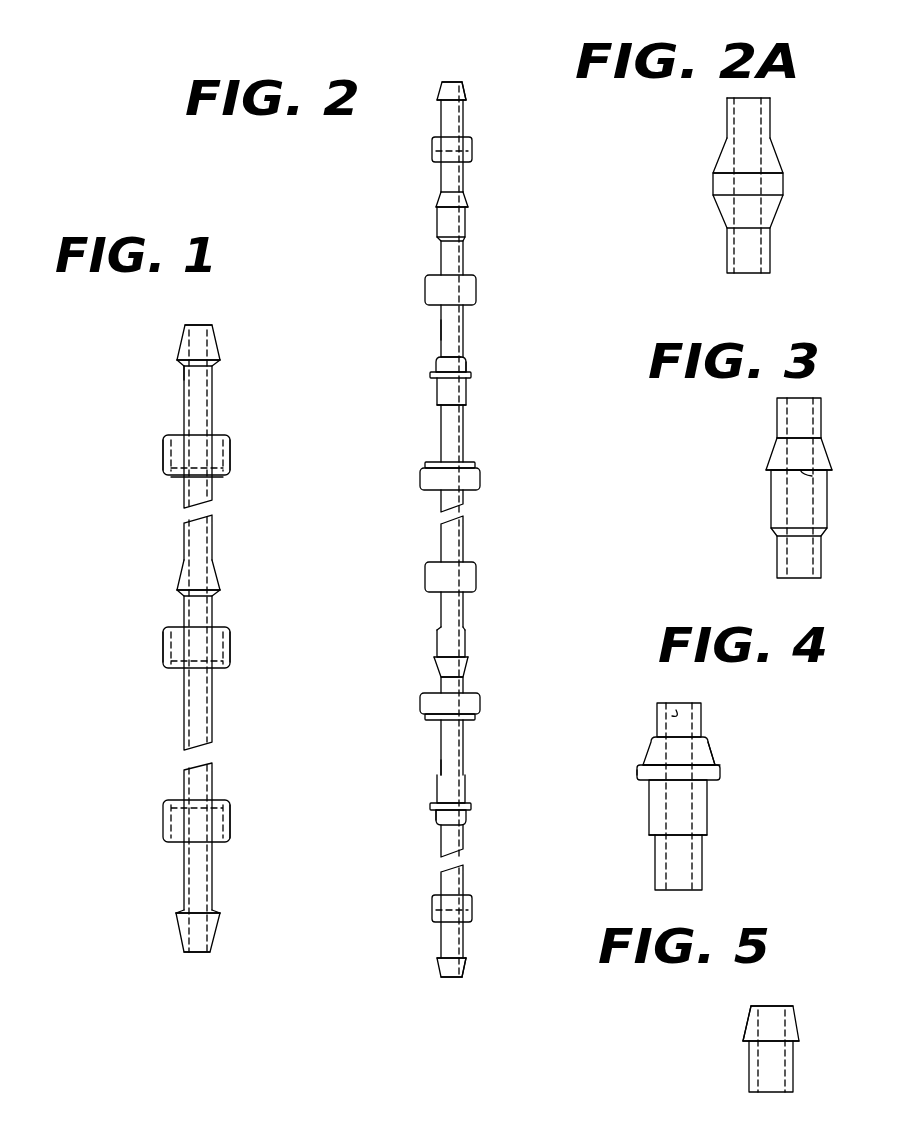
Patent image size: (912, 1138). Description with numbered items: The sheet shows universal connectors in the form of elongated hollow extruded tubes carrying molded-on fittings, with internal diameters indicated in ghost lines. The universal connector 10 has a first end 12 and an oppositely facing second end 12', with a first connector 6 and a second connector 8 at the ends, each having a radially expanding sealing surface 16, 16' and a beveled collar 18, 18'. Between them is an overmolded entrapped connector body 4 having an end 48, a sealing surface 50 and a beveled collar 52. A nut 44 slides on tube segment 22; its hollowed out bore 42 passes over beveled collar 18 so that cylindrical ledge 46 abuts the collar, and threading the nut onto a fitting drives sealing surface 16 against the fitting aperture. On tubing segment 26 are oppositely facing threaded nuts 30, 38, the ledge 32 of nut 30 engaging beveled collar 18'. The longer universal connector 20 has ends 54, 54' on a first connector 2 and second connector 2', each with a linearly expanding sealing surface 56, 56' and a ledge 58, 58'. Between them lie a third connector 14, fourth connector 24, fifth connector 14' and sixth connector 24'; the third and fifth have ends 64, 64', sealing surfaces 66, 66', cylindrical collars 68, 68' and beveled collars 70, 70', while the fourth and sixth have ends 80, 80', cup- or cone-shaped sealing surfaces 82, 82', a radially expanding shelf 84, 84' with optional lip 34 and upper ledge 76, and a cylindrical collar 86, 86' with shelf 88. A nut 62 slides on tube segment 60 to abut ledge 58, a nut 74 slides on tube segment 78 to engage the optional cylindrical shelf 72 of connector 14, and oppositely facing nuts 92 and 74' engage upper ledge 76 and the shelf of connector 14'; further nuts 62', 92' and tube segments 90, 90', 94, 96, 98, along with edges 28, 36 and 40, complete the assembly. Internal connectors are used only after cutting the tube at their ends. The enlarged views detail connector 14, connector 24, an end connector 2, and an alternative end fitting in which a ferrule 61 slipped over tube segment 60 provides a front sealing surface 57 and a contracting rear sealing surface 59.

In FIG. 2, the first connector 2 is at (436, 76).
In FIG. 5, the first connector 2 is at (789, 1045).
In FIG. 2, the second connector 2' is at (427, 957).
In FIG. 1, the entrapped connector body 4 is at (195, 578).
In FIG. 1, the first connector 6 is at (195, 348).
In FIG. 1, the second connector 8 is at (195, 938).
In FIG. 1, the universal connector 10 is at (125, 650).
In FIG. 1, the first end 12 is at (229, 302).
In FIG. 1, the second end 12' is at (220, 950).
In FIG. 2, the third overmolded connector 14 is at (431, 191).
In FIG. 3, the third overmolded connector 14 is at (769, 471).
In FIG. 2, the fifth connector 14' is at (420, 669).
In FIG. 1, the sealing surface 16 is at (220, 341).
In FIG. 1, the sealing surface 16' is at (223, 932).
In FIG. 1, the beveled collar 18 is at (220, 372).
In FIG. 1, the beveled collar 18' is at (222, 901).
In FIG. 2, the universal connector 20 is at (512, 302).
In FIG. 1, the tube segment 22 is at (184, 403).
In FIG. 2, the fourth overmolded connector 24 is at (427, 356).
In FIG. 4, the fourth overmolded connector 24 is at (652, 742).
In FIG. 2, the sixth connector 24' is at (409, 825).
In FIG. 1, the tubing segment 26 is at (185, 735).
In FIG. 1, the clip lower edge 28 is at (213, 843).
In FIG. 1, the threaded nut 30 is at (231, 823).
In FIG. 1, the ledge 32 is at (213, 805).
In FIG. 4, the lip 34 is at (645, 764).
In FIG. 1, the clip upper edge 36 is at (215, 630).
In FIG. 1, the threaded nut 38 is at (232, 650).
In FIG. 1, the clip lower edge 40 is at (215, 668).
In FIG. 1, the hollowed out bore 42 is at (215, 437).
In FIG. 1, the nut 44 is at (164, 455).
In FIG. 1, the cylindrical ledge 46 is at (215, 476).
In FIG. 1, the end 48 is at (206, 560).
In FIG. 1, the sealing surface 50 is at (220, 585).
In FIG. 1, the beveled collar 52 is at (185, 597).
In FIG. 4, the beveled collar 52 is at (676, 710).
In FIG. 2, the first end 54 is at (476, 66).
In FIG. 2A, the first end 54 is at (724, 93).
In FIG. 5, the first end 54 is at (792, 990).
In FIG. 2, the second end 54' is at (475, 994).
In FIG. 2, the sealing surface 56 is at (487, 89).
In FIG. 5, the sealing surface 56 is at (719, 1023).
In FIG. 2, the sealing surface 56' is at (492, 969).
In FIG. 2A, the sealing surface 57 is at (779, 150).
In FIG. 2, the ledge 58 is at (475, 106).
In FIG. 5, the ledge 58 is at (805, 1055).
In FIG. 2, the ledge 58' is at (474, 945).
In FIG. 2A, the rear sealing surface 59 is at (778, 215).
In FIG. 2, the tube segment 60 is at (441, 122).
In FIG. 2A, the tube segment 60 is at (771, 110).
In FIG. 3, the tube segment 60 is at (822, 410).
In FIG. 5, the tube segment 60 is at (750, 1075).
In FIG. 2A, the ferrule 61 is at (713, 178).
In FIG. 2, the nut 62 is at (477, 149).
In FIG. 2, the clip 62' is at (421, 899).
In FIG. 2, the end 64 is at (474, 182).
In FIG. 3, the end 64 is at (772, 423).
In FIG. 2, the end 64' is at (481, 683).
In FIG. 2, the sealing surface 66 is at (473, 208).
In FIG. 3, the sealing surface 66 is at (823, 454).
In FIG. 2, the sealing surface 66' is at (481, 664).
In FIG. 2, the cylindrical collar 68 is at (426, 221).
In FIG. 3, the cylindrical collar 68 is at (832, 502).
In FIG. 2, the cylindrical collar 68' is at (479, 640).
In FIG. 2, the beveled collar 70 is at (480, 238).
In FIG. 3, the beveled collar 70 is at (770, 553).
In FIG. 2, the beveled collar 70' is at (472, 614).
In FIG. 3, the cylindrical shelf 72 is at (805, 476).
In FIG. 2, the nut 74 is at (426, 273).
In FIG. 2, the clip 74' is at (472, 686).
In FIG. 4, the upper ledge 76 is at (650, 782).
In FIG. 2, the tube segment 78 is at (441, 330).
In FIG. 2, the end 80 is at (474, 345).
In FIG. 4, the end 80 is at (700, 796).
In FIG. 2, the end 80' is at (481, 841).
In FIG. 2, the sealing surface 82 is at (490, 370).
In FIG. 4, the sealing surface 82 is at (736, 748).
In FIG. 2, the sealing surface 82' is at (479, 813).
In FIG. 2, the radially expanding shelf 84 is at (470, 387).
In FIG. 4, the radially expanding shelf 84 is at (703, 775).
In FIG. 2, the flange 84' is at (423, 797).
In FIG. 2, the cylindrical collar 86 is at (423, 391).
In FIG. 4, the cylindrical collar 86 is at (709, 807).
In FIG. 2, the body 86' is at (479, 784).
In FIG. 2, the shelf 88 is at (460, 408).
In FIG. 4, the shelf 88 is at (701, 837).
In FIG. 2, the tube section 90 is at (424, 433).
In FIG. 4, the tube section 90 is at (651, 862).
In FIG. 2, the tube section 90' is at (410, 758).
In FIG. 2, the nut 92 is at (475, 486).
In FIG. 2, the clip 92' is at (425, 706).
In FIG. 2, the tube section 94 is at (441, 610).
In FIG. 2, the tube section 96 is at (464, 742).
In FIG. 2, the tube section 98 is at (464, 884).